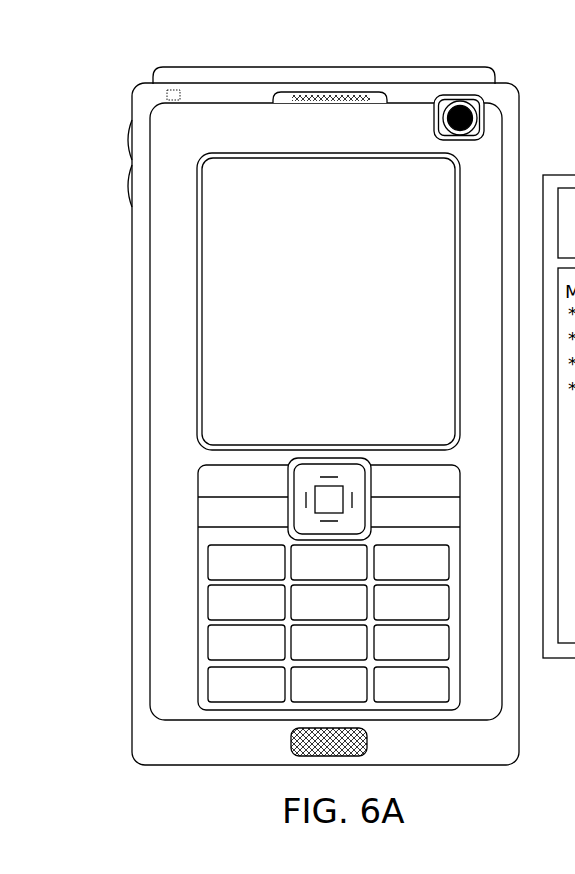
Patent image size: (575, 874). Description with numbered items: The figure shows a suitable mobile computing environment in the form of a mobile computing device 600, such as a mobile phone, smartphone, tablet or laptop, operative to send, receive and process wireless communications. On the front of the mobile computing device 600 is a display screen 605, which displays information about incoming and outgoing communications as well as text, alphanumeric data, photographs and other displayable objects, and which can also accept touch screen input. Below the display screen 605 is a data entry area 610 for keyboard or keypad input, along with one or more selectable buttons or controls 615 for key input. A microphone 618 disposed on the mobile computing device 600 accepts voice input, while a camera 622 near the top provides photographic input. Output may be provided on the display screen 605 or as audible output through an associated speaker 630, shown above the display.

The mobile computing device 600 is at (124, 86).
The display screen 605 is at (230, 283).
The data entry area 610 is at (198, 507).
The selectable buttons or controls 615 is at (220, 603).
The microphone 618 is at (292, 747).
The camera 622 is at (468, 110).
The speaker 630 is at (333, 101).